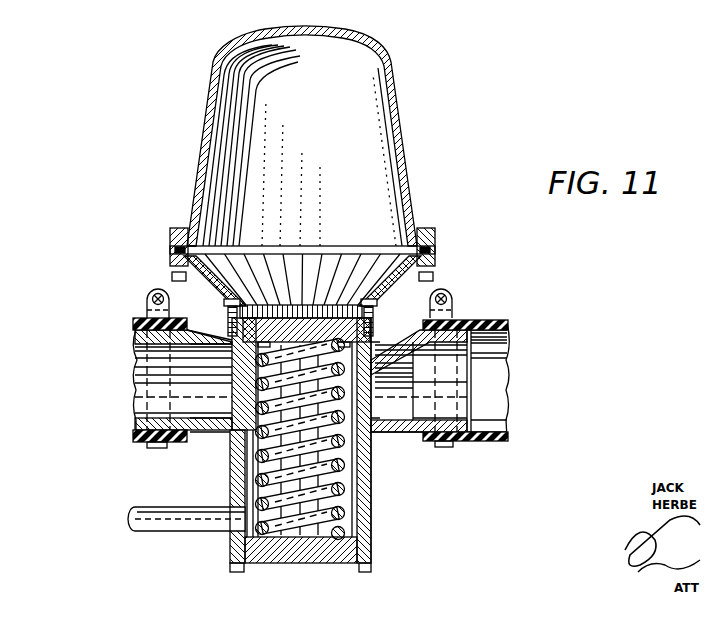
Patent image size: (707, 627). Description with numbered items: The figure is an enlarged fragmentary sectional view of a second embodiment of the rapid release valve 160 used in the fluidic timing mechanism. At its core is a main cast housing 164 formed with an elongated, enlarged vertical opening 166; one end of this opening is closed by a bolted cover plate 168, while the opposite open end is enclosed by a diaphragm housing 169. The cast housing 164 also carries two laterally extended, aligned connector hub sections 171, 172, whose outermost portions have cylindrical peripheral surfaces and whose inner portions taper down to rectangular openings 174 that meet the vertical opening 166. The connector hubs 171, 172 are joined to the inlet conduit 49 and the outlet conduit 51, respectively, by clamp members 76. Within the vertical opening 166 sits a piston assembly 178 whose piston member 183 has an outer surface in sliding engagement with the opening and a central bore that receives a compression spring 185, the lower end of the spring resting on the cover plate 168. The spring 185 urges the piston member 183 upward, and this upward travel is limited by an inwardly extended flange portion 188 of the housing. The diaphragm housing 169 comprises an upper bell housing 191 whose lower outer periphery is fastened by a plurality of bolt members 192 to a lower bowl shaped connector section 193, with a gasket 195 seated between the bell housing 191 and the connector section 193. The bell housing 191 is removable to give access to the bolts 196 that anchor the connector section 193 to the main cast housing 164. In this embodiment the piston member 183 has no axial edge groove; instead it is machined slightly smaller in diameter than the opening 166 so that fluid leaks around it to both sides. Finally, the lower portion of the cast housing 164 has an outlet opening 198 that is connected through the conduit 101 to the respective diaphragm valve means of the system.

The upper bell housing 191 is at (388, 68).
The rapid release valve 160 is at (432, 188).
The diaphragm housing 169 is at (183, 222).
The bolt members 192 is at (172, 274).
The gasket 195 is at (436, 250).
The bowl shaped connector section 193 is at (370, 305).
The piston assembly 178 is at (340, 303).
The inwardly extended flange portion 188 is at (358, 305).
The bolts 196 is at (242, 300).
The main cast housing 164 is at (365, 466).
The vertical opening 166 is at (364, 520).
The compression spring 185 is at (262, 479).
The cover plate 168 is at (300, 563).
The conduit 101 is at (160, 532).
The outlet opening 198 is at (252, 525).
The connector hub section 171 is at (160, 350).
The rectangular openings 174 is at (222, 412).
The inlet conduit 49 is at (150, 441).
The clamp members 76 is at (147, 297).
The piston member 183 is at (360, 397).
The connector hub section 172 is at (460, 362).
The outlet conduit 51 is at (485, 443).